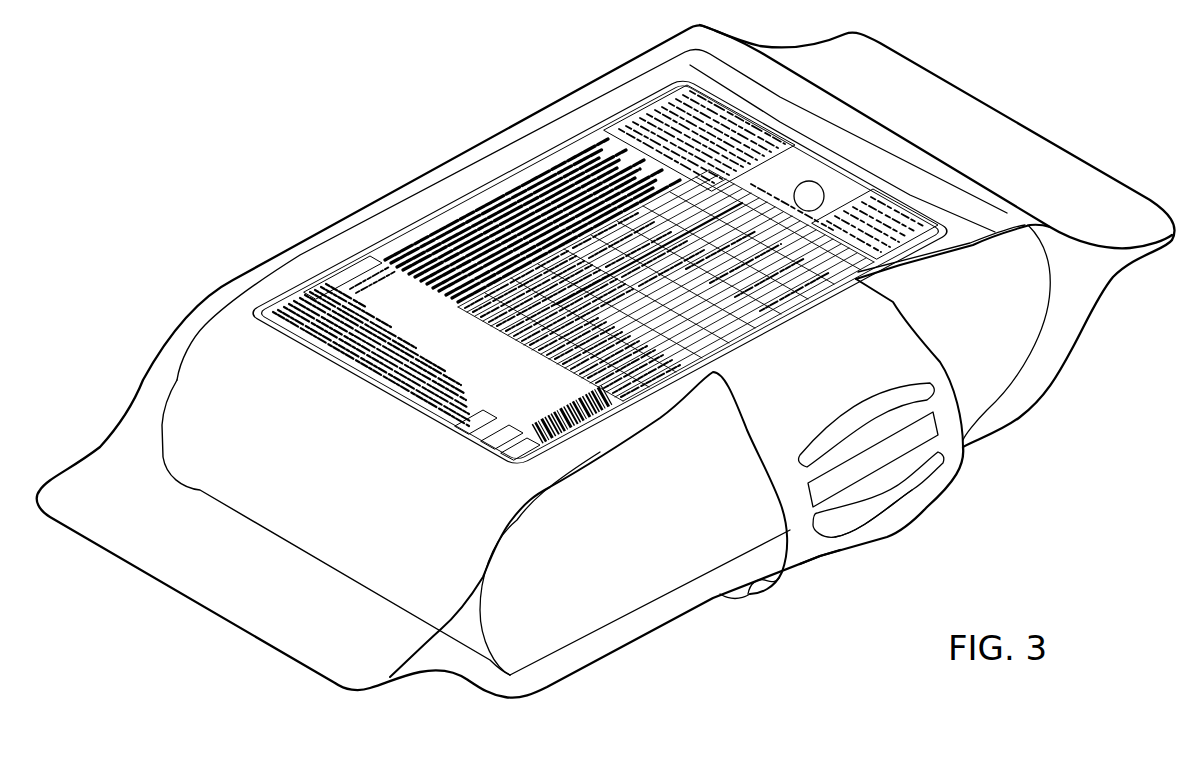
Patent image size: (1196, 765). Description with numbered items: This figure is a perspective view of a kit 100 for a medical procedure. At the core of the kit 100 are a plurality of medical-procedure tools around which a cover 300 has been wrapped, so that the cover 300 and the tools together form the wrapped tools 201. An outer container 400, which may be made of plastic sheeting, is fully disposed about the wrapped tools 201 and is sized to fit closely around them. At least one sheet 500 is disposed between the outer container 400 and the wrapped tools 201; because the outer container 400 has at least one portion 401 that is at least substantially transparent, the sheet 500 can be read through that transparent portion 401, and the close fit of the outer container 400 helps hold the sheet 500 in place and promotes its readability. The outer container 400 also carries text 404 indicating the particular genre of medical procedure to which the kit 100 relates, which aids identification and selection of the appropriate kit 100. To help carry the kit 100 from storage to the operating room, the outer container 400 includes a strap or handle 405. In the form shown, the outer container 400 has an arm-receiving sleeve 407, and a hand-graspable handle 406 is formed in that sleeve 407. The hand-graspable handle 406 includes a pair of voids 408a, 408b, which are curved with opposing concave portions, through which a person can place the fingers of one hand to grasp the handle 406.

The kit 100 is at (606, 386).
The wrapped tools 201 is at (153, 342).
The cover 300 is at (230, 300).
The outer container 400 is at (701, 478).
The at least substantially transparent portion 401 is at (427, 232).
The text 404 is at (963, 452).
The strap or handle 405 is at (817, 563).
The hand-graspable handle 406 is at (850, 538).
The arm-receiving sleeve 407 is at (755, 588).
The void 408a is at (920, 497).
The void 408b is at (850, 402).
The sheet 500 is at (600, 268).